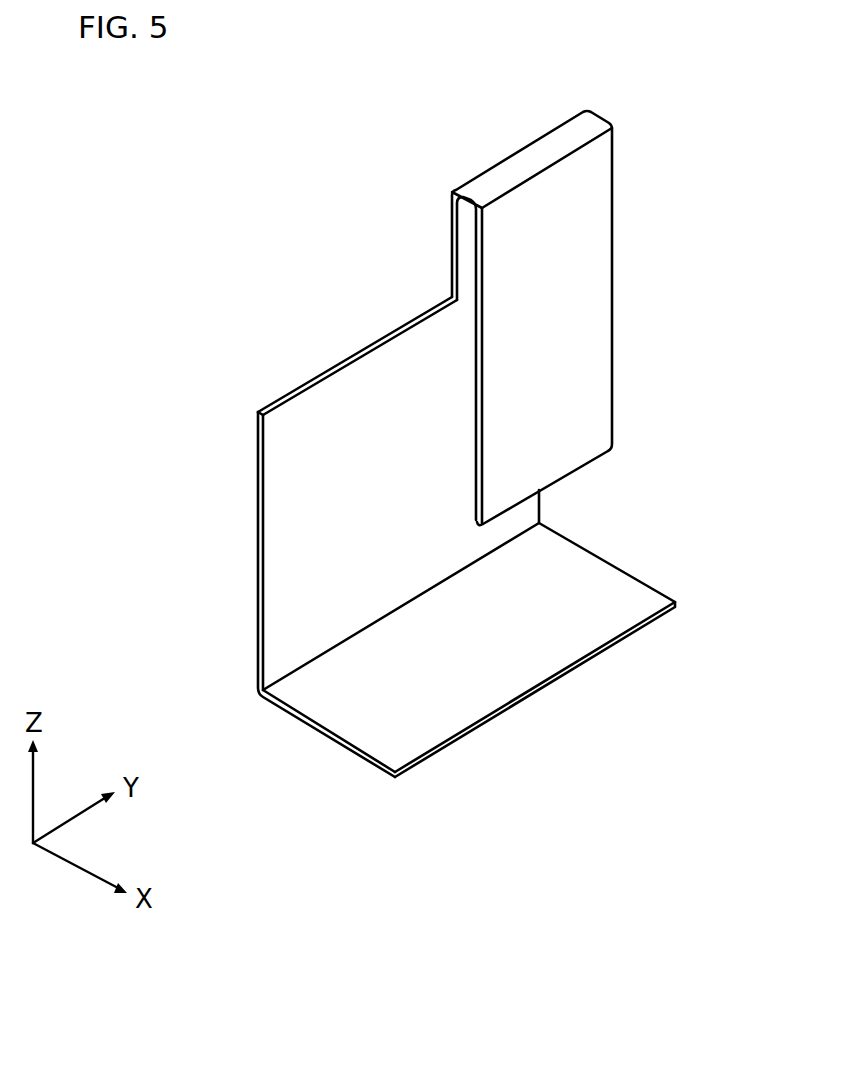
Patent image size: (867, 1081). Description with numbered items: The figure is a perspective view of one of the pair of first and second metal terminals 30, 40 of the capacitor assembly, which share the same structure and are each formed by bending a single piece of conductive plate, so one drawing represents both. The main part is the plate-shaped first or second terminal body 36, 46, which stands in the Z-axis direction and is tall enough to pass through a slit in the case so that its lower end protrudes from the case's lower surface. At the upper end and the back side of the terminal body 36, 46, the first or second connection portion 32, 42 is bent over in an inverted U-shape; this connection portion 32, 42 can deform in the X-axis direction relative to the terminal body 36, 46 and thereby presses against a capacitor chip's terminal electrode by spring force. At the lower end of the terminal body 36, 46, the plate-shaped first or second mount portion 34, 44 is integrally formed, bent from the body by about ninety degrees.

The first metal terminal 30 is at (450, 444).
The second metal terminal 40 is at (248, 279).
The first connection portion 32 is at (613, 318).
The second connection portion 42 is at (593, 290).
The first mount portion 34 is at (488, 612).
The second mount portion 44 is at (598, 582).
The first terminal body 36 is at (338, 537).
The second terminal body 46 is at (285, 497).